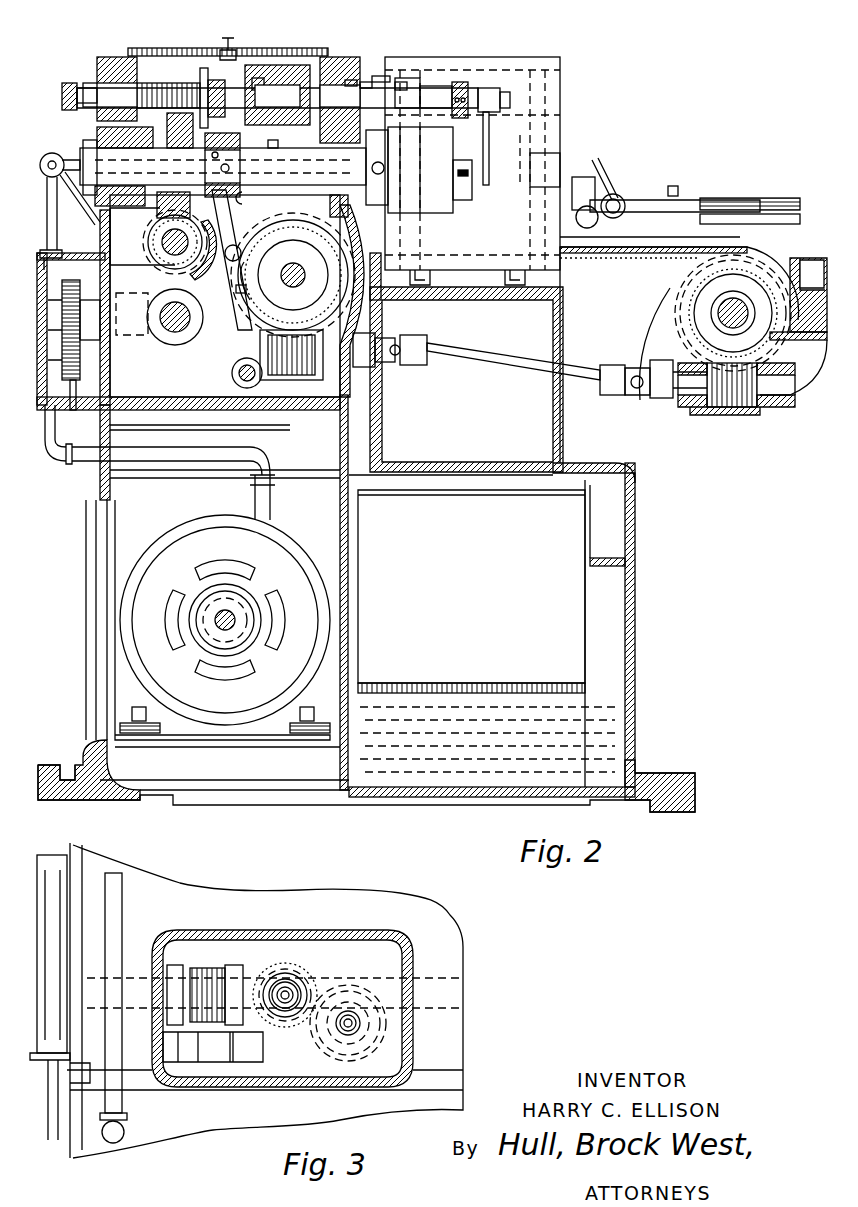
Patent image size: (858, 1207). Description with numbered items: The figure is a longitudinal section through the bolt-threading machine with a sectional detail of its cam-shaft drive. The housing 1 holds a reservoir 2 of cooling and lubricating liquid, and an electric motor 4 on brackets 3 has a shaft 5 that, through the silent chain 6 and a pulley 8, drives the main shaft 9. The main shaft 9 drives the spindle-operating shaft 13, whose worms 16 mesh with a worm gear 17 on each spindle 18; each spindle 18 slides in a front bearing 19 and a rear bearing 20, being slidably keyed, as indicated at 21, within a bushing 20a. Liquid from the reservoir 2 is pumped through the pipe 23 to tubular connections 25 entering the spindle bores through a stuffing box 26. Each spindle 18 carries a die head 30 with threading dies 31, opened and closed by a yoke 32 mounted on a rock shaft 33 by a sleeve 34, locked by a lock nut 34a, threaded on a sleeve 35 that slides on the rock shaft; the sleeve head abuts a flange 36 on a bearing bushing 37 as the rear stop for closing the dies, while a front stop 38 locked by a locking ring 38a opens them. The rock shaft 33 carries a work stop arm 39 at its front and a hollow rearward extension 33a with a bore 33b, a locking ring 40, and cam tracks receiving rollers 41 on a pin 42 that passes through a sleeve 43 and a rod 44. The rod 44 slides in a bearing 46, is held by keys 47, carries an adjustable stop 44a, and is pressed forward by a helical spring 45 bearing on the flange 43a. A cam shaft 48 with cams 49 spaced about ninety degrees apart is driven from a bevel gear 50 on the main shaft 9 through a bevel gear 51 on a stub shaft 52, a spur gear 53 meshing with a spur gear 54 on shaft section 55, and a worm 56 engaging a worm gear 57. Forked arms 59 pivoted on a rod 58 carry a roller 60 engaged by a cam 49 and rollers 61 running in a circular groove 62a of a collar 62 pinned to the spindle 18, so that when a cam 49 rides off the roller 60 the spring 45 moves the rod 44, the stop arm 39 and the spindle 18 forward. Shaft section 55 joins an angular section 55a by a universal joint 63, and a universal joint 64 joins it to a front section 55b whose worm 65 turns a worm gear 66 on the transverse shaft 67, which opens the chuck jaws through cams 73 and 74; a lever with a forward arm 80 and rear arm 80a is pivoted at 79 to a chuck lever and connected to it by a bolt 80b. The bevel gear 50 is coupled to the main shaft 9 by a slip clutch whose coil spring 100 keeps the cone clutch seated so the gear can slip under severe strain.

In FIG. 2, the housing 1 is at (635, 628).
In FIG. 2, the reservoir 2 is at (520, 700).
In FIG. 2, the brackets 3 is at (64, 507).
In FIG. 2, the electric motor 4 is at (278, 565).
In FIG. 2, the motor shaft 5 is at (236, 620).
In FIG. 2, the silent chain 6 is at (222, 826).
In FIG. 2, the pulley 8 is at (708, 455).
In FIG. 2, the main shaft 9 is at (172, 335).
In FIG. 2, the spindle-operating shaft 13 is at (166, 249).
In FIG. 2, the worms 16 is at (152, 241).
In FIG. 2, the worm gear 17 is at (188, 204).
In FIG. 2, the spindle 18 is at (223, 166).
In FIG. 2, the front bearing 19 is at (350, 206).
In FIG. 2, the rear bearing 20 is at (140, 205).
In FIG. 2, the bushing 20a is at (120, 138).
In FIG. 2, the sliding key connection 21 is at (87, 150).
In FIG. 2, the pipe 23 is at (47, 450).
In FIG. 3, the pipe 23 is at (122, 903).
In FIG. 2, the tubular connections 25 is at (42, 223).
In FIG. 2, the stuffing box 26 is at (46, 153).
In FIG. 2, the die head 30 is at (440, 213).
In FIG. 2, the threading dies 31 is at (468, 186).
In FIG. 2, the yoke 32 is at (400, 140).
In FIG. 2, the rock shaft 33 is at (426, 90).
In FIG. 2, the hollow rearward extension 33a is at (366, 80).
In FIG. 2, the bore 33b is at (350, 80).
In FIG. 2, the sleeve 34 is at (400, 78).
In FIG. 2, the lock nut 34a is at (385, 75).
In FIG. 2, the sleeve 35 is at (405, 80).
In FIG. 2, the flange 36 is at (279, 134).
In FIG. 2, the bearing bushing 37 is at (335, 58).
In FIG. 2, the front stop 38 is at (460, 80).
In FIG. 2, the locking ring 38a is at (490, 86).
In FIG. 2, the work stop arm 39 is at (491, 120).
In FIG. 2, the locking ring 40 is at (306, 63).
In FIG. 2, the rollers 41 is at (232, 40).
In FIG. 2, the pin 42 is at (262, 78).
In FIG. 2, the sleeve 43 is at (207, 66).
In FIG. 2, the flange 43a is at (205, 78).
In FIG. 2, the rod 44 is at (298, 66).
In FIG. 2, the adjustable stop 44a is at (65, 86).
In FIG. 2, the helical spring 45 is at (165, 84).
In FIG. 2, the bearing 46 is at (112, 57).
In FIG. 2, the keys 47 is at (90, 86).
In FIG. 2, the cam shaft 48 is at (300, 262).
In FIG. 2, the cams 49 is at (238, 290).
In FIG. 2, the bevel gear 50 is at (244, 266).
In FIG. 3, the bevel gear 50 is at (270, 984).
In FIG. 2, the bevel gear 51 is at (132, 304).
In FIG. 2, the stub shaft 52 is at (108, 293).
In FIG. 3, the stub shaft 52 is at (296, 996).
In FIG. 2, the spur gear 53 is at (100, 335).
In FIG. 3, the spur gear 53 is at (290, 982).
In FIG. 2, the spur gear 54 is at (73, 400).
In FIG. 3, the spur gear 54 is at (356, 1000).
In FIG. 2, the shaft section 55 is at (240, 372).
In FIG. 3, the shaft section 55 is at (342, 1037).
In FIG. 2, the shaft section 55a is at (470, 358).
In FIG. 2, the front shaft section 55b is at (680, 392).
In FIG. 2, the worm 56 is at (305, 372).
In FIG. 2, the worm gear 57 is at (386, 287).
In FIG. 2, the rod 58 is at (250, 410).
In FIG. 3, the rod 58 is at (250, 1062).
In FIG. 2, the forked arms 59 is at (247, 358).
In FIG. 2, the roller 60 is at (280, 262).
In FIG. 2, the rollers 61 is at (231, 168).
In FIG. 2, the collar 62 is at (230, 150).
In FIG. 2, the circular groove 62a is at (255, 203).
In FIG. 2, the universal joint 63 is at (402, 335).
In FIG. 2, the universal joint 64 is at (630, 366).
In FIG. 2, the worm 65 is at (740, 408).
In FIG. 2, the worm gear 66 is at (780, 408).
In FIG. 2, the shaft 67 is at (725, 310).
In FIG. 2, the cam 73 is at (770, 198).
In FIG. 2, the cam 74 is at (790, 214).
In FIG. 2, the pivot 79 is at (672, 186).
In FIG. 2, the arm 80 is at (705, 198).
In FIG. 2, the rear arm 80a is at (640, 200).
In FIG. 2, the bolt 80b is at (616, 205).
In FIG. 3, the coil spring 100 is at (212, 965).